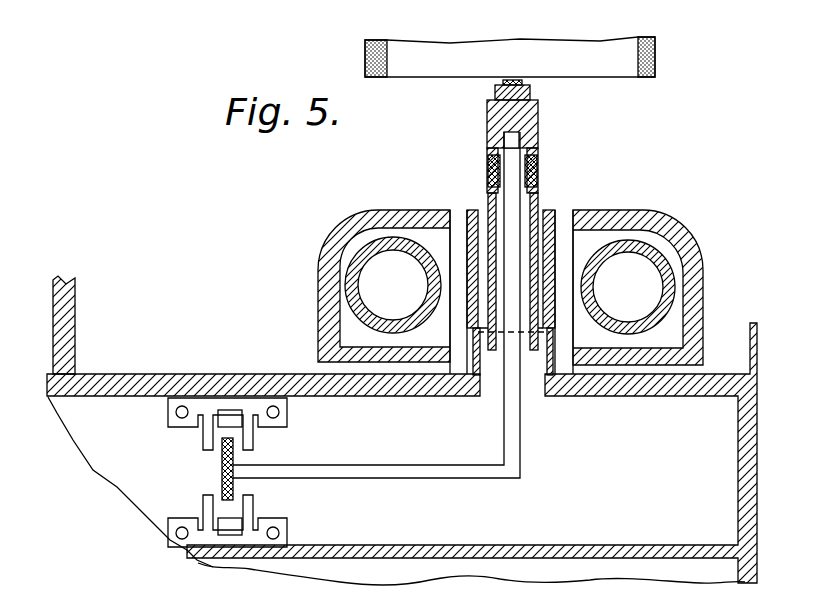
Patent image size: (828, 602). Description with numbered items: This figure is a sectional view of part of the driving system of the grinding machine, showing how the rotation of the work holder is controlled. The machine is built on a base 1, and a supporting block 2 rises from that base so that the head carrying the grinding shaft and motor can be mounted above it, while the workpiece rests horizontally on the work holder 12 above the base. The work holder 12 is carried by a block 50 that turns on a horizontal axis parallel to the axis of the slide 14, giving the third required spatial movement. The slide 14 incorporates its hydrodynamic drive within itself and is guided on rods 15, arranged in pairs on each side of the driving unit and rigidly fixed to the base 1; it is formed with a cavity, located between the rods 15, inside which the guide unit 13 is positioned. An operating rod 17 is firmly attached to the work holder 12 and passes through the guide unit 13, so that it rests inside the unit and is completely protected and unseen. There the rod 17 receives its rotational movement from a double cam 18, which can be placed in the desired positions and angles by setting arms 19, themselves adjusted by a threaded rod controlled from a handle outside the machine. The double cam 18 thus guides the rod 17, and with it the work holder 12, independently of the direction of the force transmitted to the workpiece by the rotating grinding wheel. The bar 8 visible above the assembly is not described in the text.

The base 1 is at (746, 420).
The supporting block 2 is at (70, 318).
The transverse bar 8 is at (655, 72).
The work holder 12 is at (495, 90).
The guide unit 13 is at (537, 205).
The slide 14 is at (632, 212).
The rods 15 is at (358, 262).
The operating rod 17 is at (512, 446).
The double cam 18 is at (235, 507).
The setting arms 19 is at (222, 497).
The block 50 is at (490, 125).